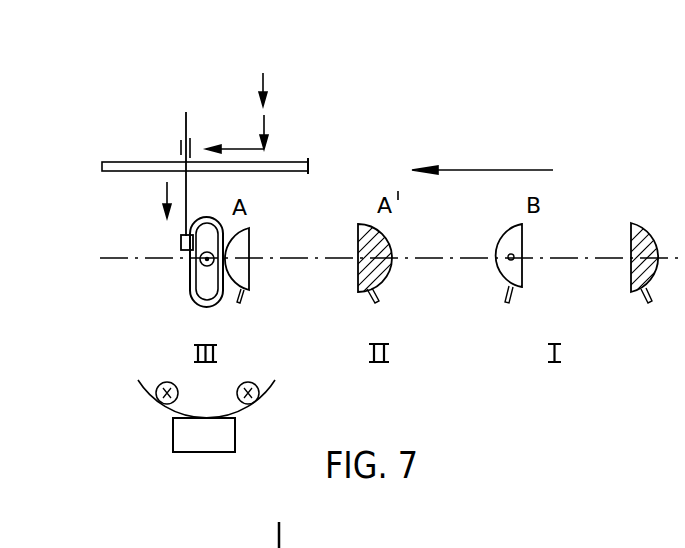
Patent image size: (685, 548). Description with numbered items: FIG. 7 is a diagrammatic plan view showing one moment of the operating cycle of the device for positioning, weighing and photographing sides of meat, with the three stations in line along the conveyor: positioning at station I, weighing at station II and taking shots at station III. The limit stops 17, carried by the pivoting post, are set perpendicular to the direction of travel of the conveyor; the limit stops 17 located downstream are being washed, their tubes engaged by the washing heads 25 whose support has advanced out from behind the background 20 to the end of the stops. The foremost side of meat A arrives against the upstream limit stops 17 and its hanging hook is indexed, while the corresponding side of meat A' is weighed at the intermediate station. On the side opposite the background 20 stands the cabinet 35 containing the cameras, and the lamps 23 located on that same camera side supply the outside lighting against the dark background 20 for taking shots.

The background 20 is at (282, 168).
The washing heads 25 is at (181, 243).
The limit stops 17 is at (190, 276).
The lamps 23 is at (250, 381).
The cabinet 35 is at (224, 431).